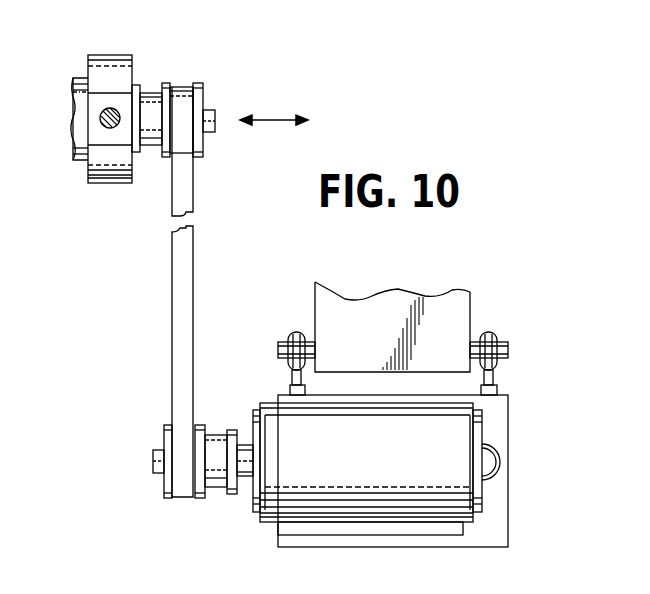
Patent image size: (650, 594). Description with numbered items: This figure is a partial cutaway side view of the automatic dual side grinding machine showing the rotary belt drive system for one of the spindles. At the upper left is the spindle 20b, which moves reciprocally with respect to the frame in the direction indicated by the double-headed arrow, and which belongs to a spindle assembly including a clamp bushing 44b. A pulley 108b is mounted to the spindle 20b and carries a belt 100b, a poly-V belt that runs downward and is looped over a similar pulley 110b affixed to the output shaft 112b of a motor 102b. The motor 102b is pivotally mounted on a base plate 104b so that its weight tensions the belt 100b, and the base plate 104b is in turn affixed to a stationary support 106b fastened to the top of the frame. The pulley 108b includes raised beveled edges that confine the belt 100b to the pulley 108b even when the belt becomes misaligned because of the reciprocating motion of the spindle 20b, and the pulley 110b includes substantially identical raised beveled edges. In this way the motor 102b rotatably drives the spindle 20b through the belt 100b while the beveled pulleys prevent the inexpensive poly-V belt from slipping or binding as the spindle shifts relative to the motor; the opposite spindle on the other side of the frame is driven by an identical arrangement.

The clamp bushing 44b is at (97, 55).
The spindle 20b is at (152, 93).
The pulley 108b is at (207, 100).
The drive belt 100b is at (197, 197).
The pulley 110b is at (200, 425).
The output shaft 112b is at (246, 480).
The motor 102b is at (398, 468).
The base plate 104b is at (498, 455).
The stationary support 106b is at (445, 307).